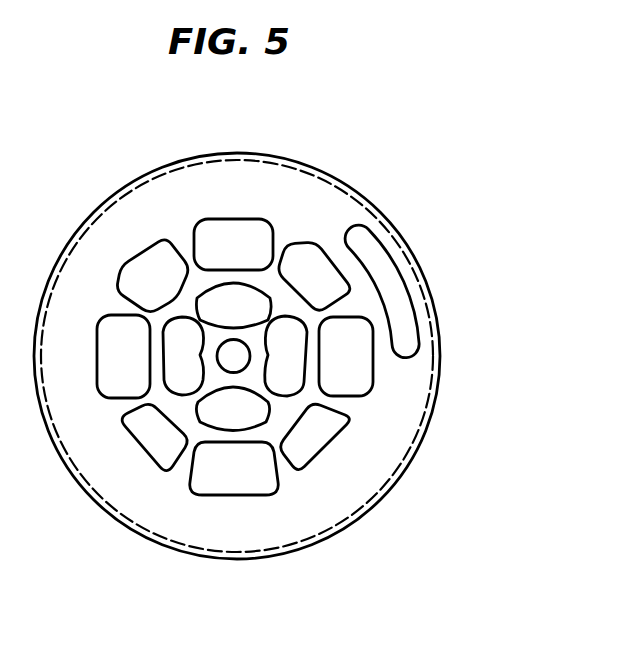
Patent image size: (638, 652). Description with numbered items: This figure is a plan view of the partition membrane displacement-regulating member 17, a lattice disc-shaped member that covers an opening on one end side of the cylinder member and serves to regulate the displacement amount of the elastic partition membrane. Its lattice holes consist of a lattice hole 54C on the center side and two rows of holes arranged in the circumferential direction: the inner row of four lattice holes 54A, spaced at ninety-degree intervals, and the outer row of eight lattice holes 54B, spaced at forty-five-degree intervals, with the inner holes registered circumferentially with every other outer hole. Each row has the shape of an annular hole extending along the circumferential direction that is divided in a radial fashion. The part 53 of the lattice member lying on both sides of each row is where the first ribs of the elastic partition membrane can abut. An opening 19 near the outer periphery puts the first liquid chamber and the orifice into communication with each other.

The partition membrane displacement-regulating member 17 is at (374, 162).
The opening 19 is at (388, 258).
The part of the lattice member 53 is at (217, 330).
The lattice holes in the inner row 54A is at (292, 360).
The lattice holes in the outer row 54B is at (298, 248).
The lattice hole on the center side 54C is at (231, 357).